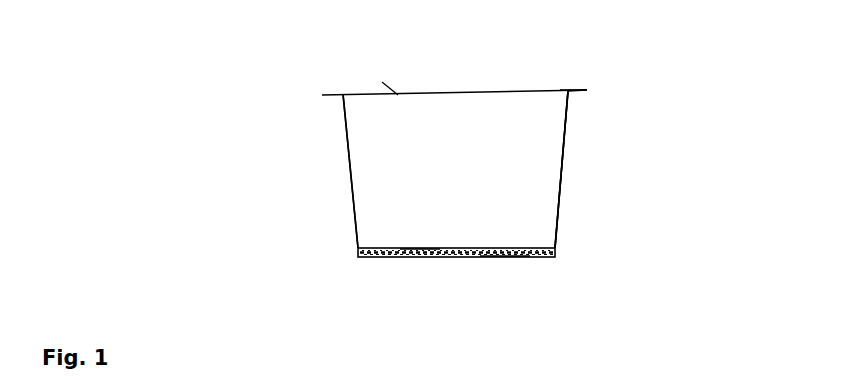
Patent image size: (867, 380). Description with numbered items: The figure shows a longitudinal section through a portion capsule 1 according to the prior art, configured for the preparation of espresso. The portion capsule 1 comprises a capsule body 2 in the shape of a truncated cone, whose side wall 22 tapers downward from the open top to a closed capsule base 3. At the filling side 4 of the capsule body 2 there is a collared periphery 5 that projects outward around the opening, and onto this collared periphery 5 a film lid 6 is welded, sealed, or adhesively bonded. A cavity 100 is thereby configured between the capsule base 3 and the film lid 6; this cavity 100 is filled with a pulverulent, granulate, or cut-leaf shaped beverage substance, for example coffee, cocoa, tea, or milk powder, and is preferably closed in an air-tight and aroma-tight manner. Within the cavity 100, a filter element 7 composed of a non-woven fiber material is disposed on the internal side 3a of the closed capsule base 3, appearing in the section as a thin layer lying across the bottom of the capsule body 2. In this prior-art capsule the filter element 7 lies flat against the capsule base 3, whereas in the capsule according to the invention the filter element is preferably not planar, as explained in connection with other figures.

The portion capsule 1 is at (431, 76).
The capsule body 2 is at (565, 150).
The capsule base 3 is at (426, 258).
The capsule base internal side 3a is at (430, 253).
The filling side 4 is at (509, 76).
The collared periphery 5 is at (585, 90).
The film lid 6 is at (410, 93).
The filter element 7 is at (505, 257).
The side wall 22 is at (347, 150).
The cavity 100 is at (532, 187).